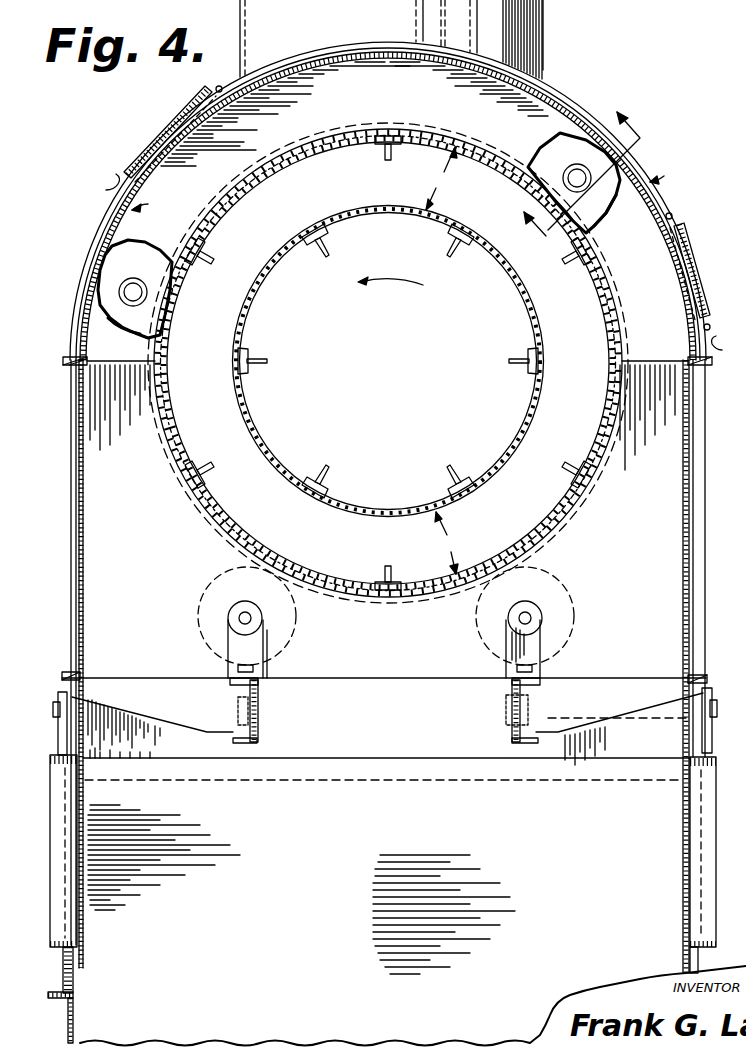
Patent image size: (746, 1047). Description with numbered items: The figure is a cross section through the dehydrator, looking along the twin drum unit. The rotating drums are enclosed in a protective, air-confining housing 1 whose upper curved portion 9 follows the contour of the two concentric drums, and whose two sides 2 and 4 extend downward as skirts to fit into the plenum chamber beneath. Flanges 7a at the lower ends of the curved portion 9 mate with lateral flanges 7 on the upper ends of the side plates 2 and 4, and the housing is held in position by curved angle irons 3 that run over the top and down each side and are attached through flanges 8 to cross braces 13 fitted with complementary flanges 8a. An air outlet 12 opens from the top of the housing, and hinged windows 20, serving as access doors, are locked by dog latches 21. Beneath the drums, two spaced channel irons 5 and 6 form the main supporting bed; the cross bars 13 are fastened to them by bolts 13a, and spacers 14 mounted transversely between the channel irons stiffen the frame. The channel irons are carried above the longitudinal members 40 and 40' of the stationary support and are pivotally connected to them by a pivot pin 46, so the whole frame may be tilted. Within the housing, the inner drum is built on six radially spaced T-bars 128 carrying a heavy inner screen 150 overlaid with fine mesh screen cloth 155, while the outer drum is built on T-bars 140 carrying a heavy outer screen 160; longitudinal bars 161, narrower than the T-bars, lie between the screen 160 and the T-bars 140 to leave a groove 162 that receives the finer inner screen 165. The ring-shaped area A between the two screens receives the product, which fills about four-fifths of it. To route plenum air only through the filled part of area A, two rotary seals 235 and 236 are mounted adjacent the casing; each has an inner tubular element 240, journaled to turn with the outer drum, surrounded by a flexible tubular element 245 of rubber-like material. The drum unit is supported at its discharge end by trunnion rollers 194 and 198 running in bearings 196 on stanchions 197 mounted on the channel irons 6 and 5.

The housing 1 is at (402, 185).
The side plate 2 is at (77, 452).
The curved angle iron 3 is at (563, 100).
The side plate 4 is at (688, 448).
The channel iron 5 is at (262, 741).
The channel iron 6 is at (510, 741).
The lateral flange 7 is at (712, 365).
The flange 7a is at (70, 358).
The flange 8 is at (708, 678).
The complementary flange 8a is at (60, 678).
The upper curved portion 9 is at (397, 58).
The air outlet 12 is at (391, 39).
The cross brace 13 is at (387, 712).
The bolt 13a is at (506, 698).
The spacer 14 is at (386, 740).
The window 20 is at (152, 142).
The dog latch 21 is at (112, 183).
The longitudinal member 40 is at (721, 720).
The longitudinal member 40' is at (44, 723).
The pivot pin 46 is at (718, 708).
The annulus A is at (442, 360).
The T-bar 128 is at (332, 248).
The T-bar 140 is at (387, 160).
The inner screen 150 is at (535, 318).
The fine mesh screen cloth 155 is at (542, 350).
The outer screen 160 is at (359, 130).
The longitudinal bar 161 is at (396, 136).
The groove 162 is at (408, 140).
The fine mesh screen 165 is at (332, 152).
The trunnion 194 is at (572, 604).
The bearing 196 is at (228, 637).
The stanchion 197 is at (228, 674).
The trunnion 198 is at (294, 630).
The rotary seal 235 is at (122, 326).
The rotary seal 236 is at (614, 214).
The tubular element 240 is at (139, 281).
The tubular element 245 is at (152, 254).